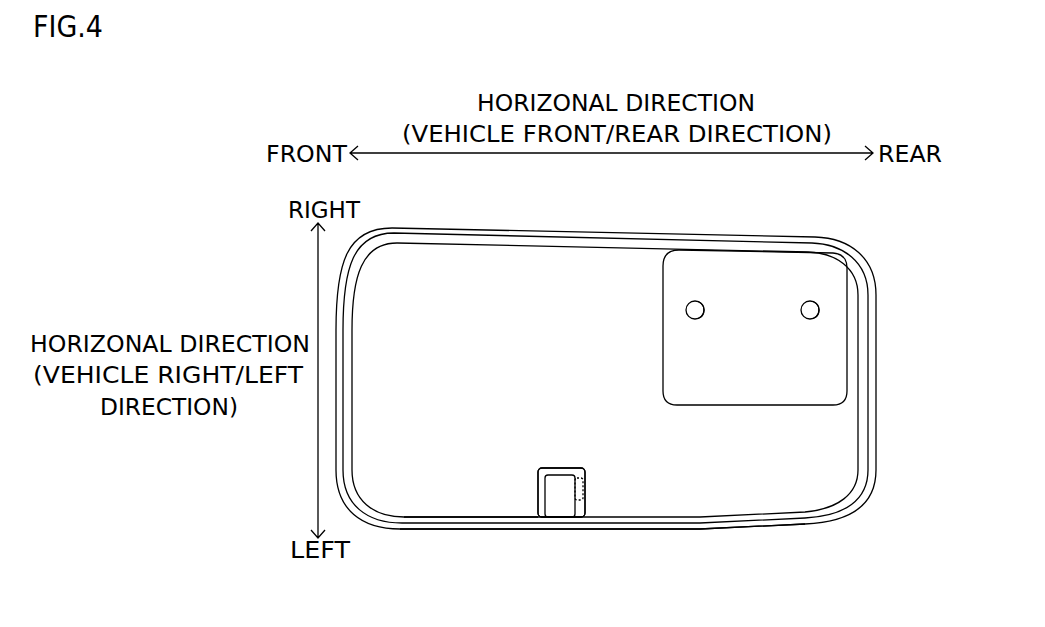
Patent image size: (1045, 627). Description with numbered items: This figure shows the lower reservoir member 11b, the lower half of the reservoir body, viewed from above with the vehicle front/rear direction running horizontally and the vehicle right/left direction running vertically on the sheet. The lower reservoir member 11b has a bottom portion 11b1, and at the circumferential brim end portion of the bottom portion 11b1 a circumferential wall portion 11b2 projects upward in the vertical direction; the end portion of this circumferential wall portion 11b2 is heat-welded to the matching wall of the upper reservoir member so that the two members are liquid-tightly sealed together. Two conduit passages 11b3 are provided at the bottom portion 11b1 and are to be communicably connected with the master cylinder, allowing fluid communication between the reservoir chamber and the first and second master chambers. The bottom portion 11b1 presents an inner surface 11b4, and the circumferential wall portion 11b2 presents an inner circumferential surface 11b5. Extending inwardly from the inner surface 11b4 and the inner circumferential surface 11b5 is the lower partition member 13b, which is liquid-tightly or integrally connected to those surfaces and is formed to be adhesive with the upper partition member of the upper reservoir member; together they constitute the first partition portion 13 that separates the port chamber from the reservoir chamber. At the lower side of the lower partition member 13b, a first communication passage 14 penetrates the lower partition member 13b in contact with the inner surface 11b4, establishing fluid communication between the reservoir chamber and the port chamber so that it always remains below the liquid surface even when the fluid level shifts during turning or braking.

The lower reservoir member 11b is at (807, 221).
The bottom portion 11b1 is at (845, 438).
The circumferential wall portion 11b2 is at (660, 530).
The conduit passage 11b3 is at (804, 315).
The inner surface 11b4 is at (508, 451).
The inner circumferential surface 11b5 is at (445, 515).
The lower partition member 13b is at (553, 468).
The first partition portion 13 is at (561, 492).
The first communication passage 14 is at (583, 490).